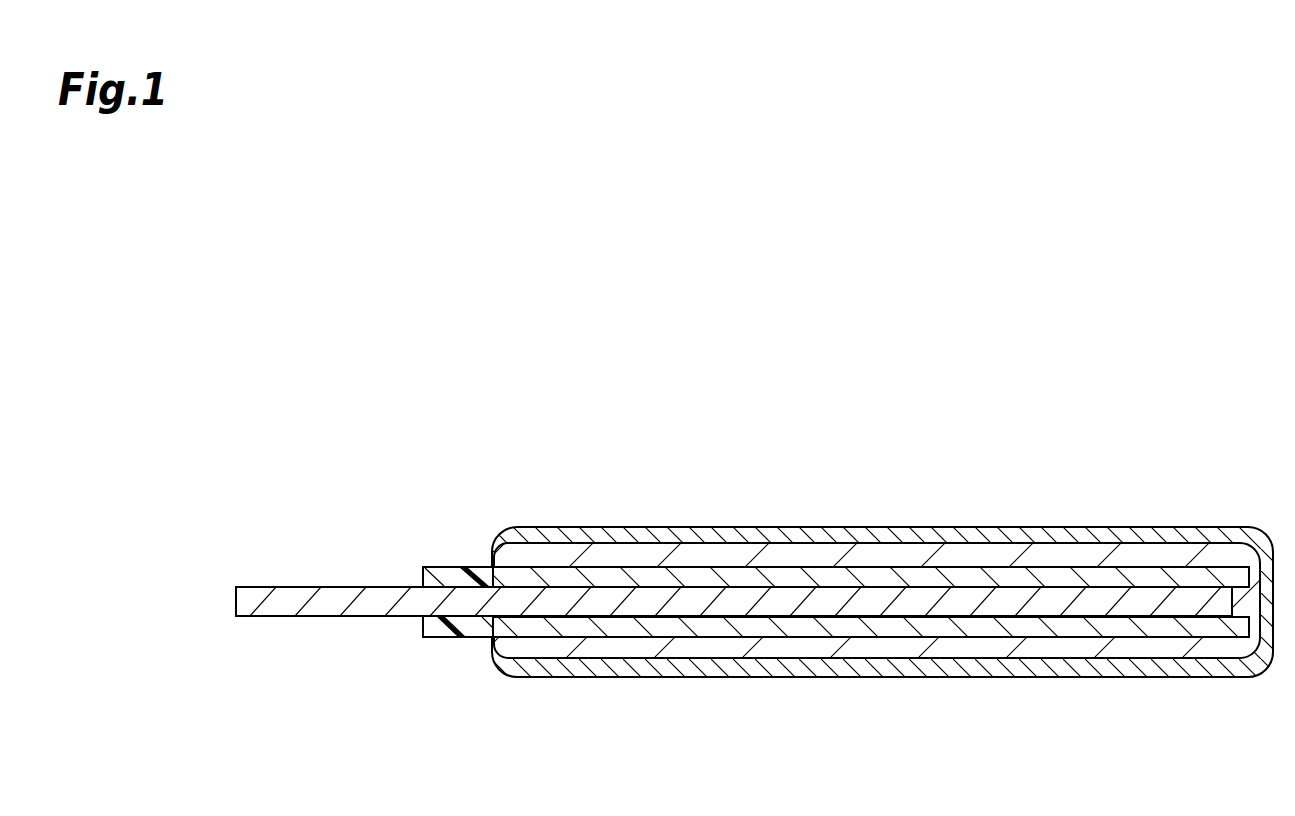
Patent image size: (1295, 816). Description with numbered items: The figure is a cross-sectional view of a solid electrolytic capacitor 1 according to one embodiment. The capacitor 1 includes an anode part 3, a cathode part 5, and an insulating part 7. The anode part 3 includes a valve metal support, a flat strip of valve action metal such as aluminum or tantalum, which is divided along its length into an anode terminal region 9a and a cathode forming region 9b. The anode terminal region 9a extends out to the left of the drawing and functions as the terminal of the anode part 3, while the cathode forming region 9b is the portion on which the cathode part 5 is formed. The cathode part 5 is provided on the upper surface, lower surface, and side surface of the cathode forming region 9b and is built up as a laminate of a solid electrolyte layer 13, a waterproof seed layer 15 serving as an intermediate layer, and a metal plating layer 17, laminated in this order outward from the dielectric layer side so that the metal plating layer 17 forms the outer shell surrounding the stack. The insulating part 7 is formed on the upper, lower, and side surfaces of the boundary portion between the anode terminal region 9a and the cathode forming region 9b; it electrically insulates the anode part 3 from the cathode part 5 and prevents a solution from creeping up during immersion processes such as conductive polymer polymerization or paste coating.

The solid electrolytic capacitor 1 is at (1231, 426).
The anode part 3 is at (336, 587).
The cathode part 5 is at (908, 527).
The insulating part 7 is at (460, 577).
The anode terminal region 9a is at (283, 605).
The cathode forming region 9b is at (1038, 603).
The solid electrolyte layer 13 is at (637, 580).
The waterproof seed layer 15 is at (733, 558).
The metal plating layer 17 is at (1060, 527).